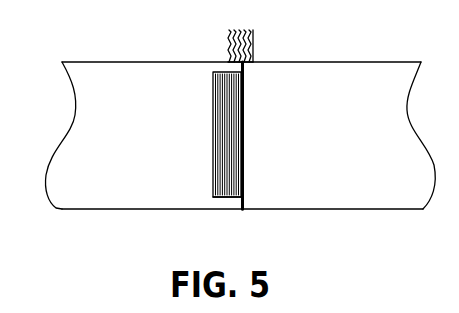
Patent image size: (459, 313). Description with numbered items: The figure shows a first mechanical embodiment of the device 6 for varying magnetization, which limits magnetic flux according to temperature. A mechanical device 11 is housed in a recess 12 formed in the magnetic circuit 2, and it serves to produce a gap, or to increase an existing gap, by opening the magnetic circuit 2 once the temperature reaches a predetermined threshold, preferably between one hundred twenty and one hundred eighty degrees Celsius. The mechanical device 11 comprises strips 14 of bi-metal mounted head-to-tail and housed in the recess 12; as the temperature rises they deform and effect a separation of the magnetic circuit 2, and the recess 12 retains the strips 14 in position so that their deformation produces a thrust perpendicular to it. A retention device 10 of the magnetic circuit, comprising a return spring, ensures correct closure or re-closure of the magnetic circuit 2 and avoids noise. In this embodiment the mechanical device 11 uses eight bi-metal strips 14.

The magnetic circuit 2 is at (116, 90).
The device for varying magnetization 6 is at (259, 138).
The retention device 10 is at (237, 38).
The mechanical device 11 is at (214, 125).
The recess 12 is at (213, 197).
The strips of bi-metal 14 is at (243, 163).